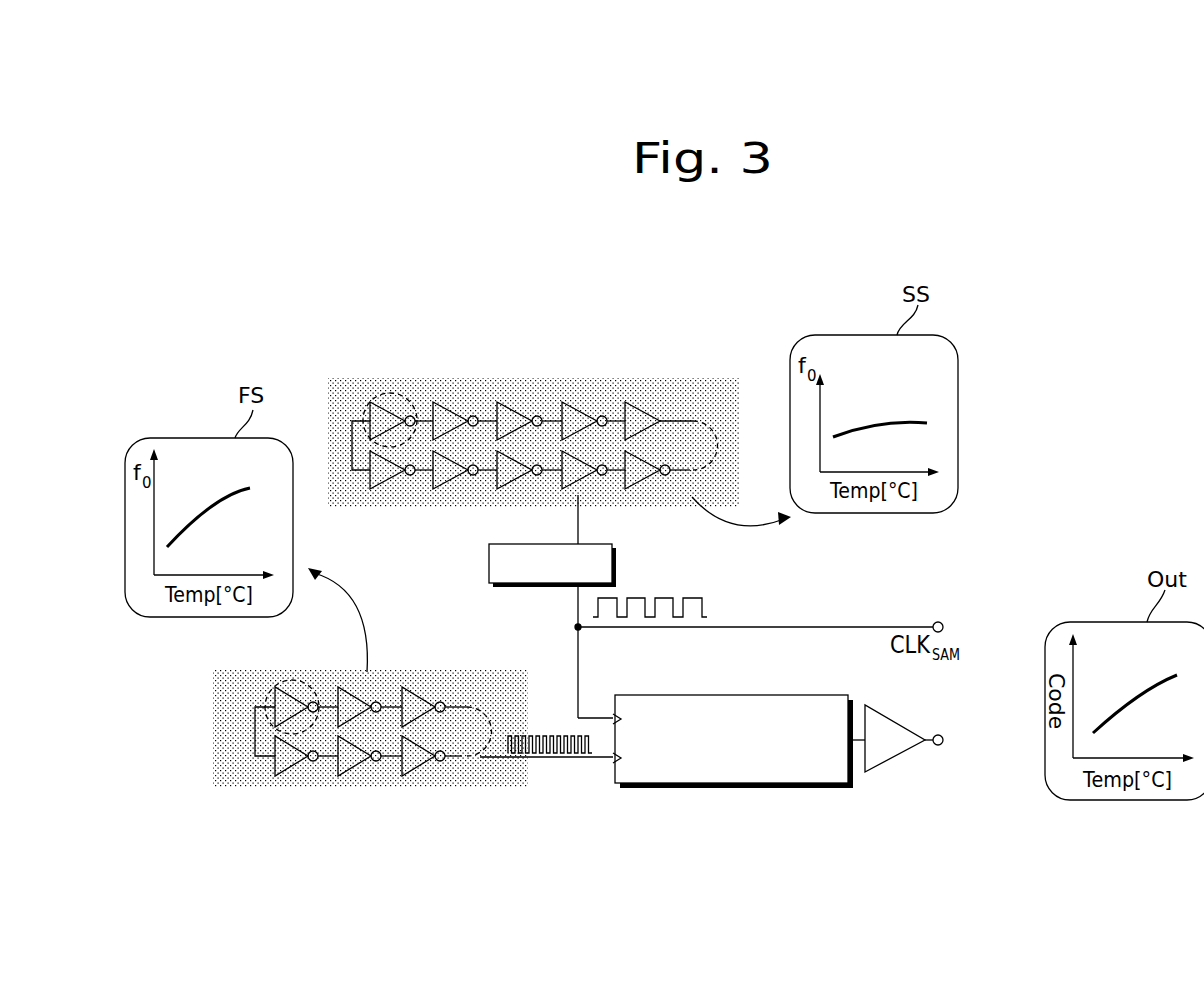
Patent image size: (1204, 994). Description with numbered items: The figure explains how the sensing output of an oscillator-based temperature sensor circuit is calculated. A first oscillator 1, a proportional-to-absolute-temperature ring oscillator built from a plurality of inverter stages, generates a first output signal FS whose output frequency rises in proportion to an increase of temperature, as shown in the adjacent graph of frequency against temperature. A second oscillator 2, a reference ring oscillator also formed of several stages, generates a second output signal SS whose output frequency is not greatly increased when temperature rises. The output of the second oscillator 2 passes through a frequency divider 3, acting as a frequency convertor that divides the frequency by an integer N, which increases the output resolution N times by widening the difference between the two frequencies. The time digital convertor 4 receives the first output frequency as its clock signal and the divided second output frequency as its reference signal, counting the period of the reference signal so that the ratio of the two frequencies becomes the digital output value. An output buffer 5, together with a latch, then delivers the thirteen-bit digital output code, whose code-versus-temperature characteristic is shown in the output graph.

The first oscillator 1 is at (392, 672).
The second oscillator 2 is at (642, 383).
The frequency divider 3 is at (613, 562).
The time digital convertor 4 is at (789, 693).
The output buffer 5 is at (903, 718).